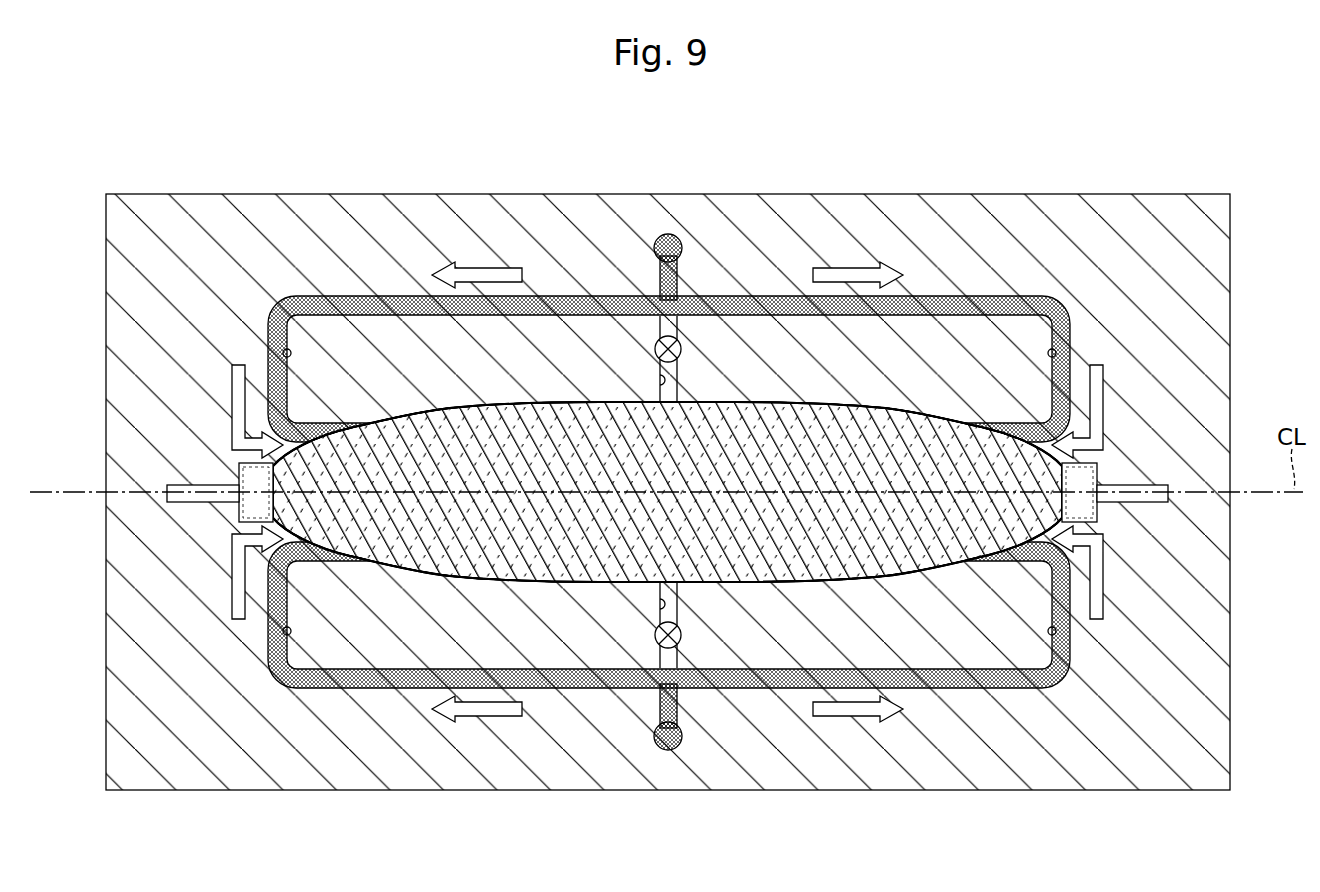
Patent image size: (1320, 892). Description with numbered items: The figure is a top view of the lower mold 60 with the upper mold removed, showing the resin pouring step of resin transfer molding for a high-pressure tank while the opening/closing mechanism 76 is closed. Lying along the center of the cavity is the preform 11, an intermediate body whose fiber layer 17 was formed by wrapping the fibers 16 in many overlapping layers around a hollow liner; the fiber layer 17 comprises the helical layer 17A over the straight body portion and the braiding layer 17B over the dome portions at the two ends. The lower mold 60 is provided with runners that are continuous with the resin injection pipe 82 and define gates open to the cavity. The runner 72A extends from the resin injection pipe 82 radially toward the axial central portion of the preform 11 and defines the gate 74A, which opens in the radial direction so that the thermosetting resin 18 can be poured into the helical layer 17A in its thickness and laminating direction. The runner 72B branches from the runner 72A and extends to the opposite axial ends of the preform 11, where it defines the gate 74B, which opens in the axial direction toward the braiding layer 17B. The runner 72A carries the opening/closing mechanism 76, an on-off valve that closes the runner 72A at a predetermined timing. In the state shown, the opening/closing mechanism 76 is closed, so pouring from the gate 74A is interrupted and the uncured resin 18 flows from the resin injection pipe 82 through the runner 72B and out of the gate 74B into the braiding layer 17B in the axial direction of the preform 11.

The lower mold 60 is at (146, 178).
The resin injection pipe 82 is at (665, 234).
The thermosetting resin 18 is at (679, 272).
The runner 72B is at (282, 355).
The runner 72A is at (680, 392).
The opening/closing mechanism 76 is at (655, 349).
The fibers 16 is at (570, 457).
The fiber layer 17 is at (667, 451).
The helical layer 17A is at (752, 455).
The braiding layer 17B is at (350, 472).
The gate 74A is at (652, 404).
The gate 74B is at (397, 432).
The preform 11 is at (802, 595).